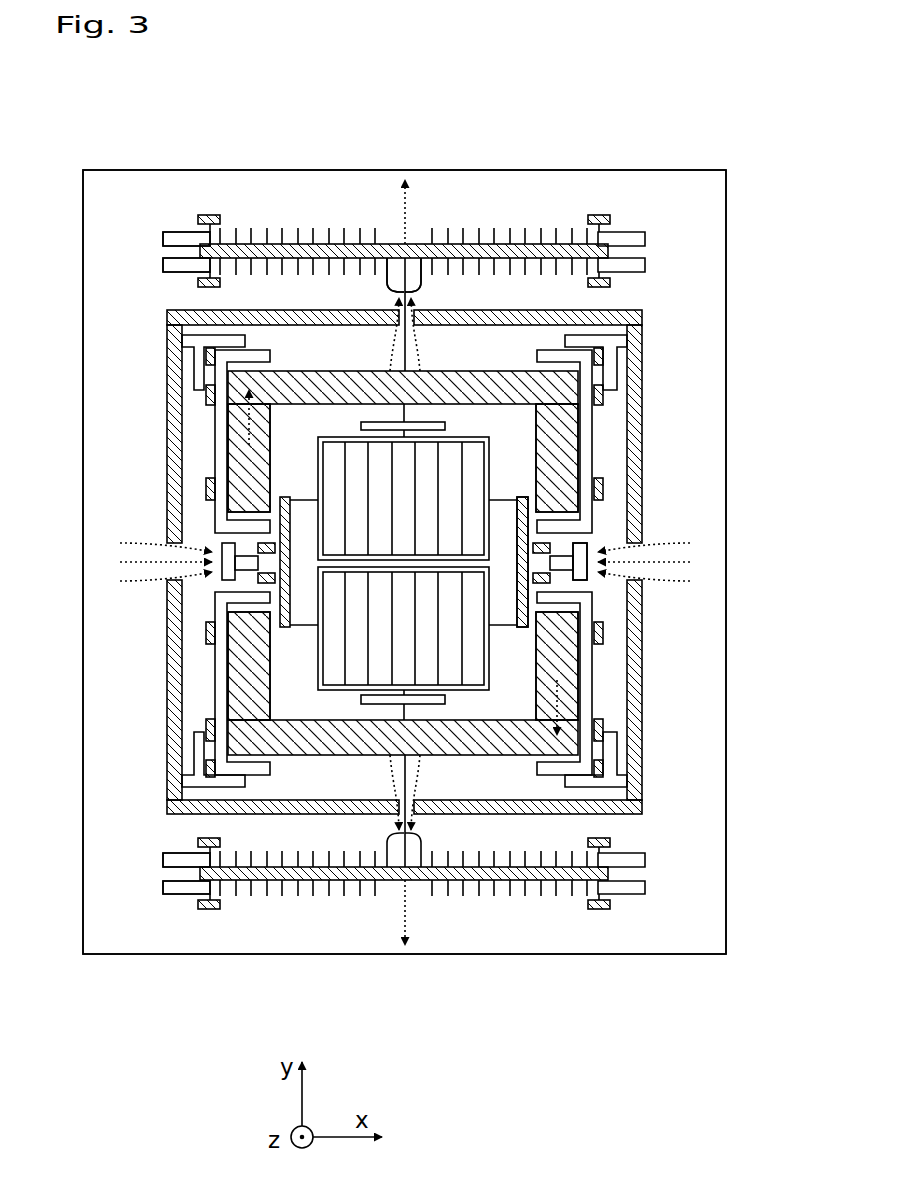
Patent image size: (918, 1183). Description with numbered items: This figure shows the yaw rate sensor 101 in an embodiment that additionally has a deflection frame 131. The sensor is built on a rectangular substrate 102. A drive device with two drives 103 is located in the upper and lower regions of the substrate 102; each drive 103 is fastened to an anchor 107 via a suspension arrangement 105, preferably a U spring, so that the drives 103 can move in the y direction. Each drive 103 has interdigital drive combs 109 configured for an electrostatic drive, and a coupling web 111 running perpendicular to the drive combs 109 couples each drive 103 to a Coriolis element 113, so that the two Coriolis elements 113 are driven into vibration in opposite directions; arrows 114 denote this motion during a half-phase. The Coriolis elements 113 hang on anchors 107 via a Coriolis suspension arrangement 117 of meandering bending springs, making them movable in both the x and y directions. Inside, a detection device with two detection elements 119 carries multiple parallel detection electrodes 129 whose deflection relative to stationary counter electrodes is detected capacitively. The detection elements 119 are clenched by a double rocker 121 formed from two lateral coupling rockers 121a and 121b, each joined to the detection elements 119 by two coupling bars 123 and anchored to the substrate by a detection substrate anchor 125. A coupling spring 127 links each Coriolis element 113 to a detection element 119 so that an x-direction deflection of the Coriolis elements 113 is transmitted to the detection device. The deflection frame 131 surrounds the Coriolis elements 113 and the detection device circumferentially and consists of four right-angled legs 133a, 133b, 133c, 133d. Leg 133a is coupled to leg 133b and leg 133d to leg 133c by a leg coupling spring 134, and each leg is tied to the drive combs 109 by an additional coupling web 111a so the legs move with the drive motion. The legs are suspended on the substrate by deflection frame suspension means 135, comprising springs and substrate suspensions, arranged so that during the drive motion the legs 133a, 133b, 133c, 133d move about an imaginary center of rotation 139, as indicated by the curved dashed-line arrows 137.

The yaw rate sensor 101 is at (738, 118).
The substrate 102 is at (726, 186).
The drive 103 is at (163, 246).
The suspension arrangement 105 is at (163, 235).
The anchor 107 is at (210, 215).
The drive combs 109 is at (263, 243).
The coupling web 111 is at (417, 295).
The additional coupling web 111a is at (387, 292).
The Coriolis element 113 is at (298, 310).
The arrows 114 is at (408, 212).
The Coriolis suspension arrangement 117 is at (215, 357).
The detection element 119 is at (338, 437).
The double rocker 121 is at (580, 447).
The coupling rocker 121a is at (170, 542).
The coupling rocker 121b is at (645, 622).
The coupling bar 123 is at (228, 453).
The detection substrate anchor 125 is at (280, 583).
The coupling spring 127 is at (447, 425).
The detection electrodes 129 is at (345, 650).
The deflection frame 131 is at (228, 422).
The leg 133a is at (642, 427).
The leg 133b is at (645, 657).
The leg 133c is at (228, 682).
The leg 133d is at (228, 471).
The leg coupling spring 134 is at (215, 572).
The deflection frame suspension means 135 is at (190, 338).
The curved dashed-line arrows 137 is at (417, 348).
The imaginary center of rotation 139 is at (167, 312).